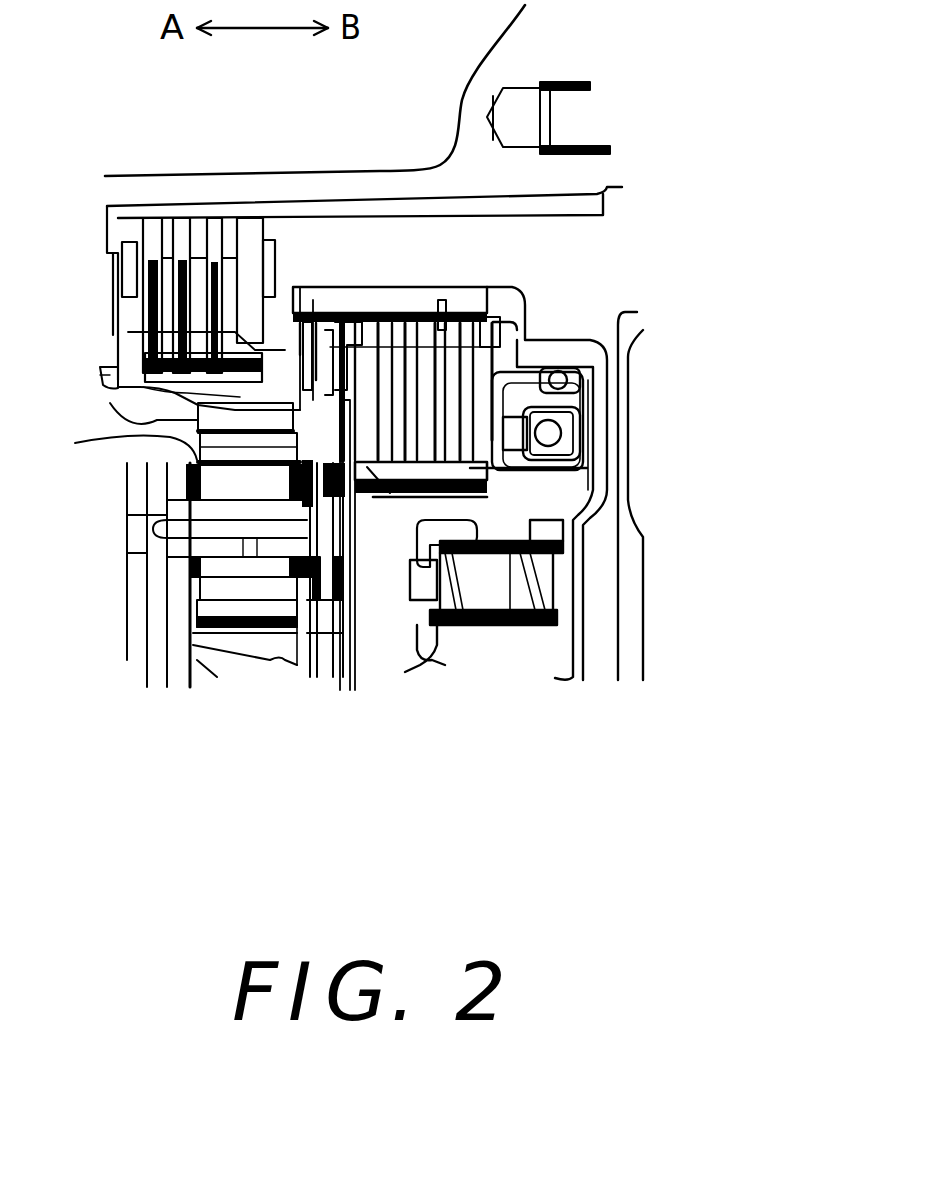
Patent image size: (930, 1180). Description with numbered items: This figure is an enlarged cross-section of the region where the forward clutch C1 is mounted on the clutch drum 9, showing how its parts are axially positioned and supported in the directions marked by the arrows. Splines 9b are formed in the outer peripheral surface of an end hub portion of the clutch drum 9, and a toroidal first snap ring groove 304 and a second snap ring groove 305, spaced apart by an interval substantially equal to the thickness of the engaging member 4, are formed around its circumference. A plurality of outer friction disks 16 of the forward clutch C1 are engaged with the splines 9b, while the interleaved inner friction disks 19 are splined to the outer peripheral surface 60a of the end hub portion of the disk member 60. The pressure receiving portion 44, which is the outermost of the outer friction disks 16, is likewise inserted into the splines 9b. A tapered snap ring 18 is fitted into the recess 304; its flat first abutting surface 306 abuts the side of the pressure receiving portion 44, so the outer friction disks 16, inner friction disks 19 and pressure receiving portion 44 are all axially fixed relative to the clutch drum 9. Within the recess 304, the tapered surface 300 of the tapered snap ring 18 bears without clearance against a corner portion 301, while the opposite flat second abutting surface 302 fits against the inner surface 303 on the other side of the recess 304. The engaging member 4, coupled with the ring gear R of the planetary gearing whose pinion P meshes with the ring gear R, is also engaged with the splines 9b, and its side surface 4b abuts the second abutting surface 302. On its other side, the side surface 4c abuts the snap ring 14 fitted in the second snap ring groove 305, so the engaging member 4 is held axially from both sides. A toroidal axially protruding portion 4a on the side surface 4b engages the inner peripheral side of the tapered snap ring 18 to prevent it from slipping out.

The second abutting surface 302 is at (303, 345).
The inner surface 303 is at (327, 350).
The first snap ring groove 304 is at (363, 320).
The second snap ring groove 305 is at (258, 307).
The tapered surface 300 is at (360, 330).
The corner portion 301 is at (378, 360).
The first abutting surface 306 is at (390, 493).
The clutch drum 9 is at (507, 300).
The splines 9b is at (446, 320).
The outer friction disks 16 is at (463, 300).
The pressure receiving portion 44 is at (467, 350).
The forward clutch C1 is at (500, 322).
The snap ring 14 is at (128, 334).
The engaging member 4 is at (102, 370).
The axially protruding portion 4a is at (340, 665).
The side surface 4b is at (370, 540).
The side surface 4c is at (298, 665).
The ring gear R is at (110, 392).
The pinion P is at (123, 443).
The tapered snap ring 18 is at (370, 497).
The inner friction disks 19 is at (507, 627).
The disk member 60 is at (360, 610).
The outer peripheral surface 60a is at (490, 473).